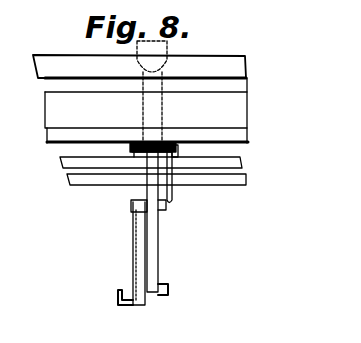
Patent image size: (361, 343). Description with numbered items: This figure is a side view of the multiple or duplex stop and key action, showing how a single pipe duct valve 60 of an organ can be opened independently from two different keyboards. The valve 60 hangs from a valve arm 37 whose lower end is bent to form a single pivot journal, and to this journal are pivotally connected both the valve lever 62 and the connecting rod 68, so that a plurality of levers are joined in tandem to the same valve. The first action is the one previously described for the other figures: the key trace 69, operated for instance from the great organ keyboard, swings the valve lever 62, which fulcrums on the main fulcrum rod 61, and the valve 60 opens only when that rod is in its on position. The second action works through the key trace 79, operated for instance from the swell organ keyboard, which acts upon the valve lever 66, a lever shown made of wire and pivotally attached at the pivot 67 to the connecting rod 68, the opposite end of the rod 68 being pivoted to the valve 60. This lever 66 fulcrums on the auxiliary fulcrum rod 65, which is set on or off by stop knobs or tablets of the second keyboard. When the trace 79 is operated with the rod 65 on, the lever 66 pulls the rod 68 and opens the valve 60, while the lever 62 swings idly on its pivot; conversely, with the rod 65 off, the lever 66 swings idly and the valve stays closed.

The valve arm 37 is at (176, 155).
The pipe duct valve 60 is at (132, 145).
The main fulcrum rod 61 is at (203, 184).
The valve lever 62 is at (150, 256).
The auxiliary fulcrum rod 65 is at (98, 167).
The valve lever 66 is at (133, 258).
The pivotal attachment 67 is at (131, 205).
The connecting rod 68 is at (162, 212).
The key trace 69 is at (160, 287).
The key trace 79 is at (120, 306).